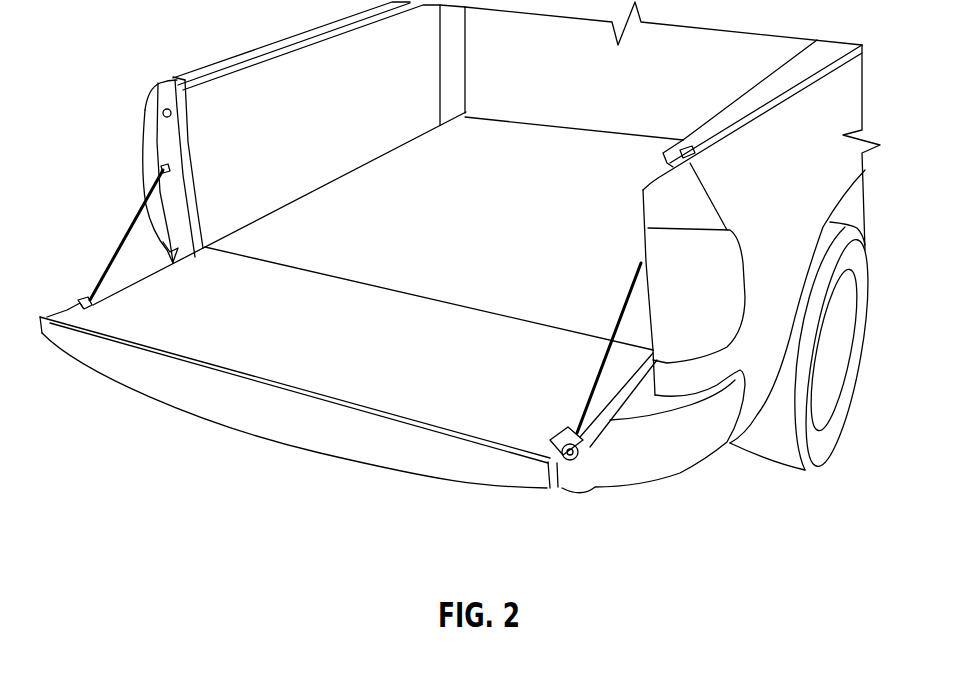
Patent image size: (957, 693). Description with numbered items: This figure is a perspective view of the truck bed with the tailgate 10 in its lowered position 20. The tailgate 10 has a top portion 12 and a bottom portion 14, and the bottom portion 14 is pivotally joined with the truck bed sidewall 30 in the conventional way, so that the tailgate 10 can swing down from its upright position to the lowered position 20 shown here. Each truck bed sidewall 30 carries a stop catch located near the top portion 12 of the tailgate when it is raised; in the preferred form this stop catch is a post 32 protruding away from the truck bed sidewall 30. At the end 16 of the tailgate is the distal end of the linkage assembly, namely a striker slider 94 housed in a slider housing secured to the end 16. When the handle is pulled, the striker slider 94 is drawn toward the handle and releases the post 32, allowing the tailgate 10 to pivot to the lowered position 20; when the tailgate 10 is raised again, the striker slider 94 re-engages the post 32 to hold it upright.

The tailgate 10 is at (488, 462).
The top portion 12 is at (175, 365).
The bottom portion 14 is at (277, 275).
The end of the tailgate 16 is at (85, 300).
The lowered position 20 is at (110, 218).
The truck bed sidewall 30 is at (163, 137).
The post 32 is at (163, 107).
The striker slider 94 is at (565, 470).